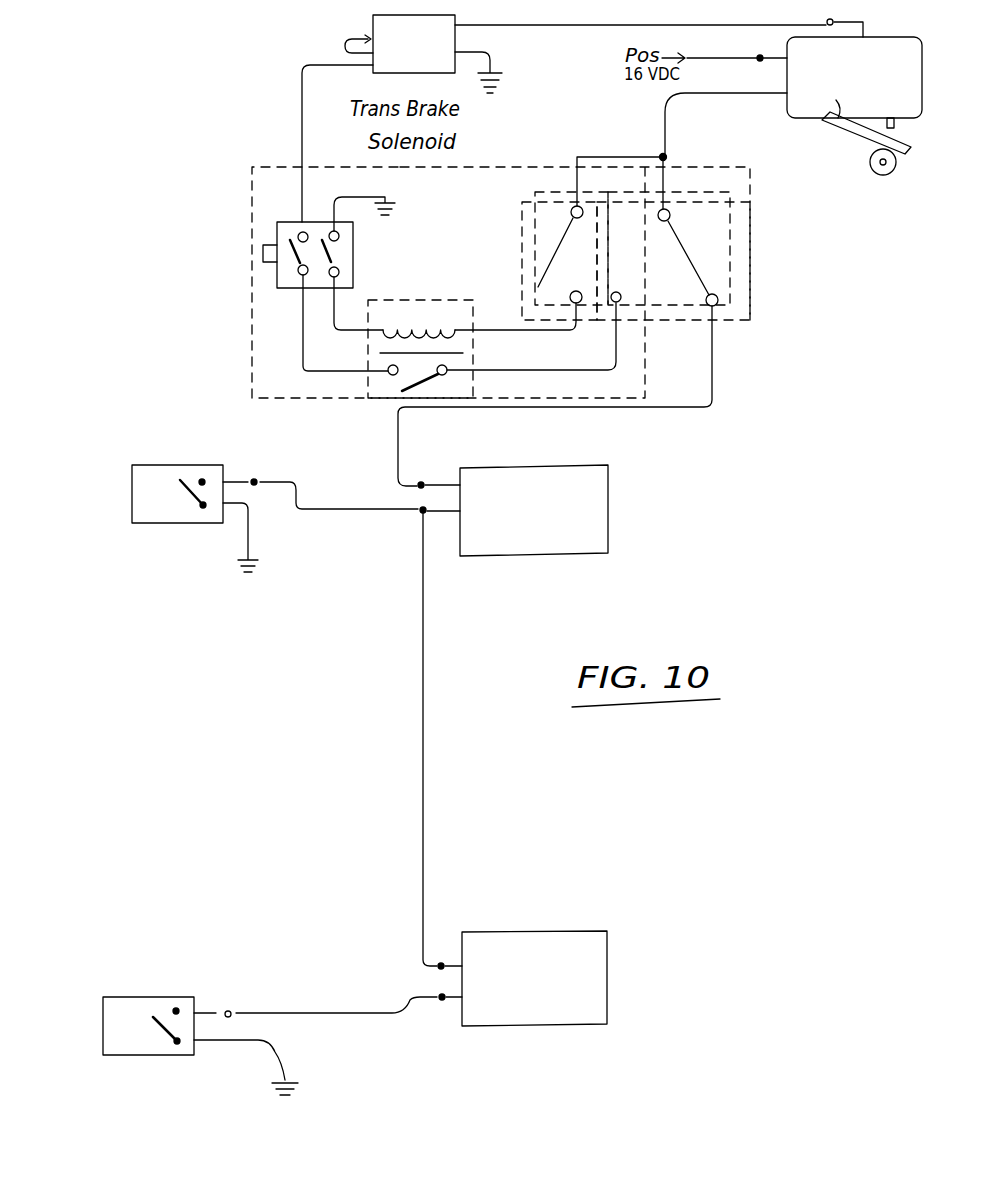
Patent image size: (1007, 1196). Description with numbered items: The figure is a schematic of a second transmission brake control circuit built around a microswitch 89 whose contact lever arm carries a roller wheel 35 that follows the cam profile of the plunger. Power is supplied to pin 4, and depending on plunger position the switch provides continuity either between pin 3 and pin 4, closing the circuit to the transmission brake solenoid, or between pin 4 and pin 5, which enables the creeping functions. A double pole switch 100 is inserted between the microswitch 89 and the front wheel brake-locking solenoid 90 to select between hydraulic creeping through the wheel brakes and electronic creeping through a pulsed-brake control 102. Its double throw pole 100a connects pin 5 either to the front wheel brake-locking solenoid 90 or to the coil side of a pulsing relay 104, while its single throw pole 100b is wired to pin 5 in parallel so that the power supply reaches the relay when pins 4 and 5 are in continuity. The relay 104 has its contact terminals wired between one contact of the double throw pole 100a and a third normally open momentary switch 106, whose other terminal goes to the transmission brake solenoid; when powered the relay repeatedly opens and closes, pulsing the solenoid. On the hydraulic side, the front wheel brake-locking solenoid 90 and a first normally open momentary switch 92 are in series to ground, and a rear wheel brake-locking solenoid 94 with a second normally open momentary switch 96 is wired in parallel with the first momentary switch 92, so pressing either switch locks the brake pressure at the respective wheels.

The pin 3 is at (849, 43).
The pin 4 is at (744, 60).
The pin 5 is at (734, 121).
The roller wheel 35 is at (870, 168).
The microswitch 89 is at (833, 120).
The front wheel brake-locking solenoid 90 is at (545, 538).
The first normally open momentary switch 92 is at (160, 483).
The rear wheel brake-locking solenoid 94 is at (540, 1010).
The second normally open momentary switch 96 is at (140, 1015).
The double pole switch 100 is at (738, 322).
The double throw pole 100a is at (718, 265).
The single throw pole 100b is at (552, 230).
The pulsed-brake control 102 is at (262, 223).
The pulsing relay 104 is at (420, 305).
The third normally open momentary switch 106 is at (290, 283).